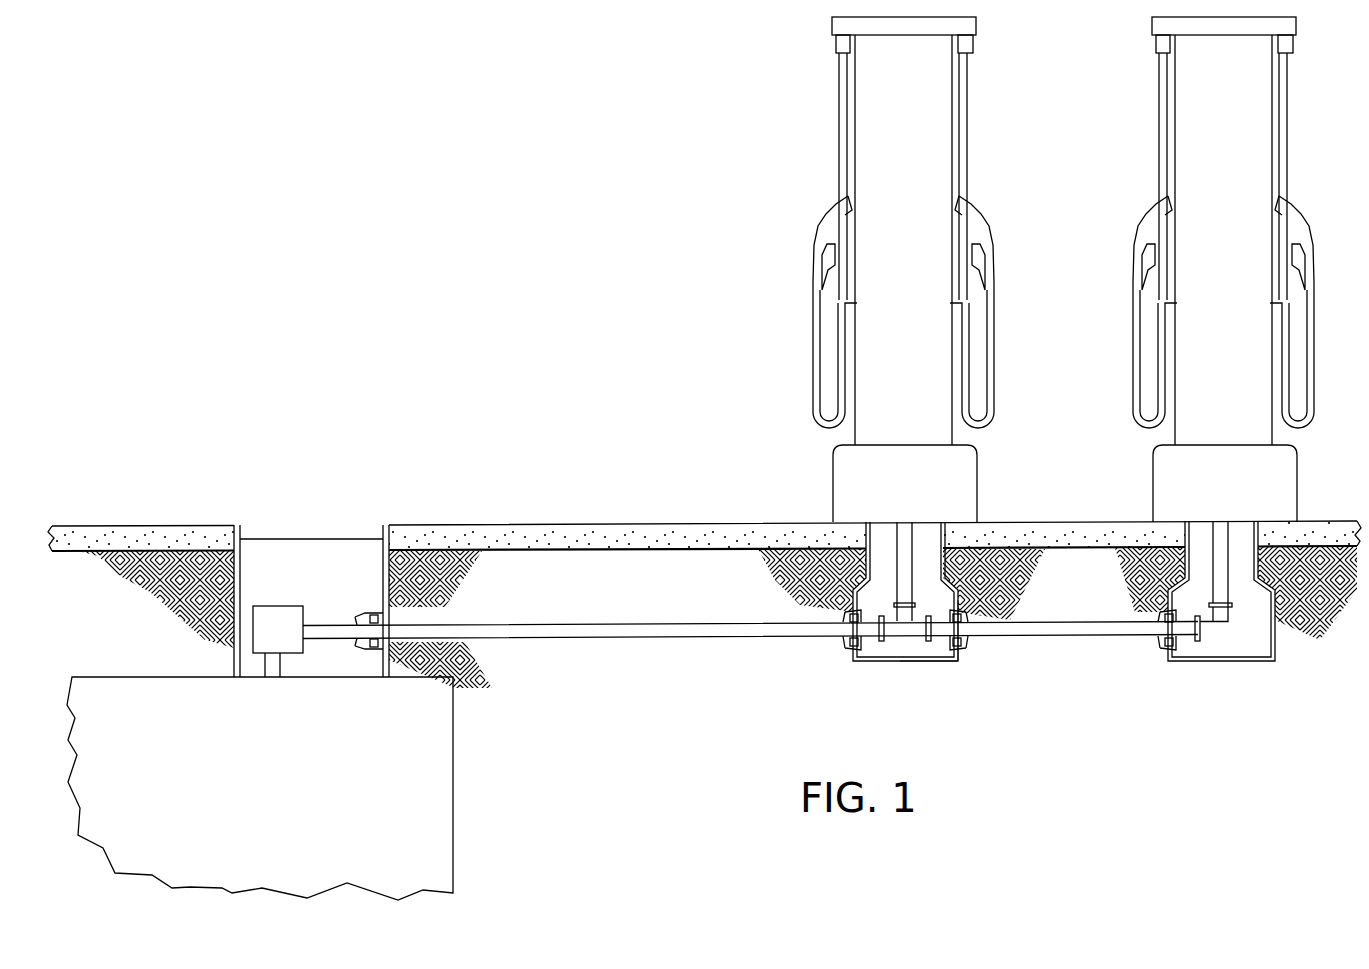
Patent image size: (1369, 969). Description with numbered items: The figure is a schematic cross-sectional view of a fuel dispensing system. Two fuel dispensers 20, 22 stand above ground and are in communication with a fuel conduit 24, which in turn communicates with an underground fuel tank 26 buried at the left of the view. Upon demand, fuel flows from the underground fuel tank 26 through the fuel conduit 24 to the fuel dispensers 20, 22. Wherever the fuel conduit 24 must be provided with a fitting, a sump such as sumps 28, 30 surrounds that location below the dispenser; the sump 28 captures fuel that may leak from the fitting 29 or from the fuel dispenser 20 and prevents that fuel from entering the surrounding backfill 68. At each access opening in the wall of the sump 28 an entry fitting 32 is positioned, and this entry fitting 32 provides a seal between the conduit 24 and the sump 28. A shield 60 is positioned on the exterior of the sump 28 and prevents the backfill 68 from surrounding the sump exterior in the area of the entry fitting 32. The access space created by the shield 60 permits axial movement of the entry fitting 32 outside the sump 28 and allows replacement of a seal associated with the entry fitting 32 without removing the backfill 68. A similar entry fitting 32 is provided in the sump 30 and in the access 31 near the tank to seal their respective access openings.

The fuel dispenser 20 is at (838, 131).
The fuel dispenser 22 is at (1157, 133).
The fuel conduit 24 is at (625, 640).
The underground fuel tank 26 is at (453, 768).
The sump 28 is at (892, 610).
The fitting 29 is at (907, 633).
The sump 30 is at (1265, 639).
The access 31 is at (328, 598).
The entry fitting 32 is at (938, 655).
The shield 60 is at (977, 662).
The backfill 68 is at (652, 605).